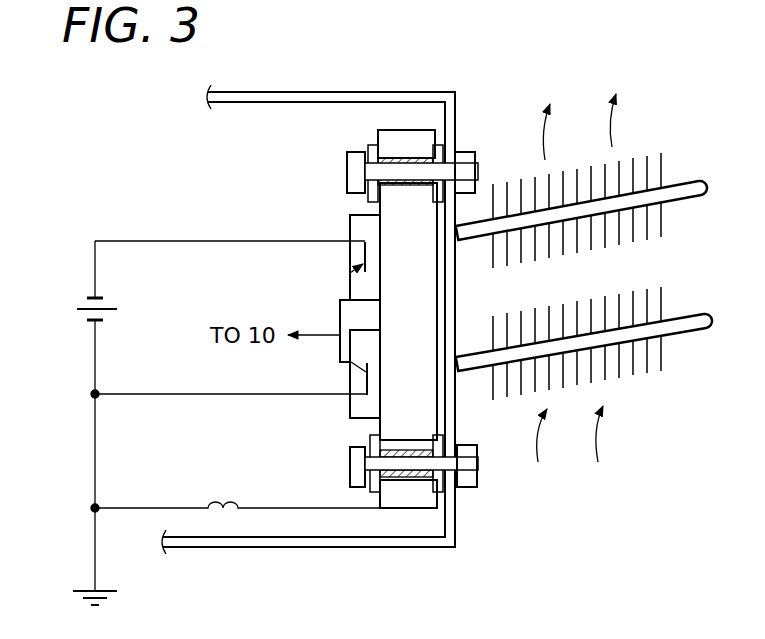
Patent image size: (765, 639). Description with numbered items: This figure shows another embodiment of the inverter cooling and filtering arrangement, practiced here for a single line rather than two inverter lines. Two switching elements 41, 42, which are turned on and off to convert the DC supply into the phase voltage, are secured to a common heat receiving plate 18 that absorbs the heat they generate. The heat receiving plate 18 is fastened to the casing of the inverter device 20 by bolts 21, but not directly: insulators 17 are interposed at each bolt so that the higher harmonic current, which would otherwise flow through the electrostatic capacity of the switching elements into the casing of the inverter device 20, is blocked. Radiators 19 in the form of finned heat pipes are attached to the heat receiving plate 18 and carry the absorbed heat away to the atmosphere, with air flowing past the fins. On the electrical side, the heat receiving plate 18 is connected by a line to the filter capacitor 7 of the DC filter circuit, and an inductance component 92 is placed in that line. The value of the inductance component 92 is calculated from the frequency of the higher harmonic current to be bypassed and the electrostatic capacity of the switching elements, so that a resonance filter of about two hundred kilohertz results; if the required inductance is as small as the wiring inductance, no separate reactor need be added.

The filter capacitor 7 is at (81, 300).
The insulator 17 is at (377, 145).
The heat receiving plate 18 is at (382, 321).
The radiator 19 is at (668, 202).
The casing of the inverter device 20 is at (321, 90).
The bolt 21 is at (475, 156).
The switching element 41 is at (352, 274).
The switching element 42 is at (363, 393).
The inductance component 92 is at (224, 497).